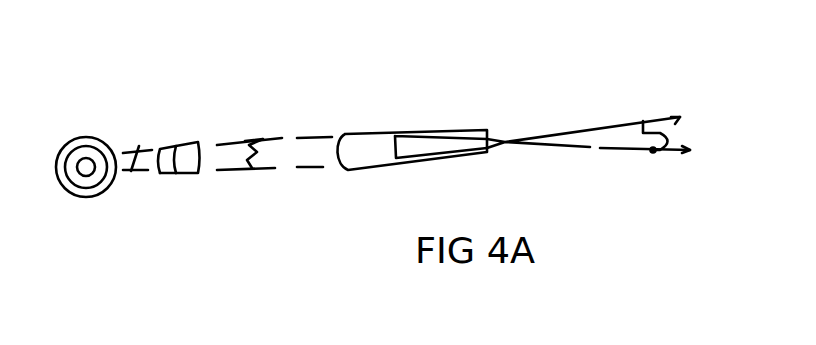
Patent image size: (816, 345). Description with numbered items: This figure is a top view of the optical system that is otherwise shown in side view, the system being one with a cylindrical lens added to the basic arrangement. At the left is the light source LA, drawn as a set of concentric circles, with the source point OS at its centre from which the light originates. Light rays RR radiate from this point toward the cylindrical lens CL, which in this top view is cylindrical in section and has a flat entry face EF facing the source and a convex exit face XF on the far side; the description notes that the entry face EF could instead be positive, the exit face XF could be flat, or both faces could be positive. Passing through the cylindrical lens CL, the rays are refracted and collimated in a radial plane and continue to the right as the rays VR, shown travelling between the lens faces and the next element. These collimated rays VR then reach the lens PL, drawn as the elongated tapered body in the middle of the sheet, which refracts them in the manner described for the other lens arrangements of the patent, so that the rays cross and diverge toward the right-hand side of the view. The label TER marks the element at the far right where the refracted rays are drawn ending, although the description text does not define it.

The light source LA is at (62, 191).
The source point OS is at (88, 170).
The light rays RR is at (139, 146).
The entry face EF is at (170, 147).
The exit face XF is at (197, 149).
The cylindrical lens CL is at (182, 183).
The rays VR is at (263, 138).
The lens PL is at (382, 132).
The terminal TER is at (652, 153).